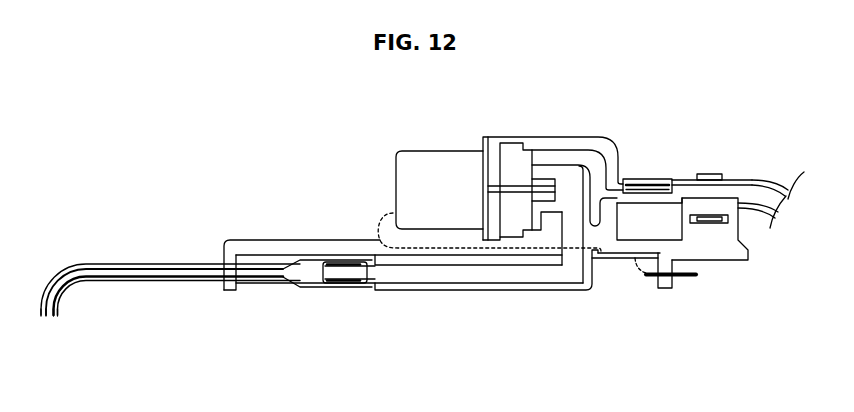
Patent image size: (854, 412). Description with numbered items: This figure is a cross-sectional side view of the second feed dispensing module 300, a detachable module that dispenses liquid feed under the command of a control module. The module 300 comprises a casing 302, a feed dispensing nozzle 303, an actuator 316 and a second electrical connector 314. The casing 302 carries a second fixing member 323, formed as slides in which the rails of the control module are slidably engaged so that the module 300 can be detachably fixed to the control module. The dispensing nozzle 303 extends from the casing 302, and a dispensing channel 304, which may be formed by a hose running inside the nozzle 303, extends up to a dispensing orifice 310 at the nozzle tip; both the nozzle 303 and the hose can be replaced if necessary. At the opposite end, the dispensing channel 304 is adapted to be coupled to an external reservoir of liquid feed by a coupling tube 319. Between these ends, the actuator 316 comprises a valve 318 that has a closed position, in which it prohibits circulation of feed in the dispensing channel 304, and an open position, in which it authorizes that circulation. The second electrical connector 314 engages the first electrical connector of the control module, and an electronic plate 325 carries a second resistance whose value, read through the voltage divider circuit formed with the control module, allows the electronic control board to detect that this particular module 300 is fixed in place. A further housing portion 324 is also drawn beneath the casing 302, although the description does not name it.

The second feed dispensing module 300 is at (284, 161).
The casing 302 is at (298, 240).
The feed dispensing nozzle 303 is at (134, 257).
The dispensing channel 304 is at (152, 280).
The dispensing orifice 310 is at (51, 329).
The second electrical connector 314 is at (684, 286).
The actuator 316 is at (449, 174).
The valve 318 is at (412, 186).
The coupling tube 319 is at (752, 192).
The second fixing member 323 is at (323, 302).
The lower housing 324 is at (511, 298).
The electronic plate 325 is at (621, 266).